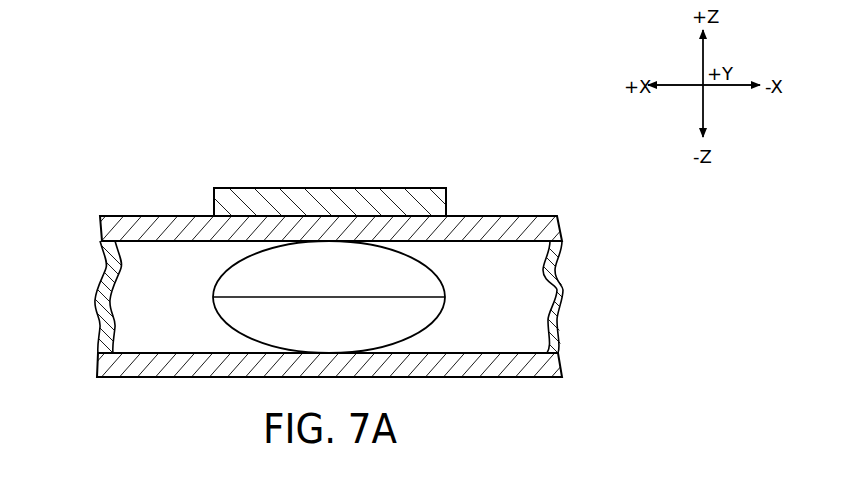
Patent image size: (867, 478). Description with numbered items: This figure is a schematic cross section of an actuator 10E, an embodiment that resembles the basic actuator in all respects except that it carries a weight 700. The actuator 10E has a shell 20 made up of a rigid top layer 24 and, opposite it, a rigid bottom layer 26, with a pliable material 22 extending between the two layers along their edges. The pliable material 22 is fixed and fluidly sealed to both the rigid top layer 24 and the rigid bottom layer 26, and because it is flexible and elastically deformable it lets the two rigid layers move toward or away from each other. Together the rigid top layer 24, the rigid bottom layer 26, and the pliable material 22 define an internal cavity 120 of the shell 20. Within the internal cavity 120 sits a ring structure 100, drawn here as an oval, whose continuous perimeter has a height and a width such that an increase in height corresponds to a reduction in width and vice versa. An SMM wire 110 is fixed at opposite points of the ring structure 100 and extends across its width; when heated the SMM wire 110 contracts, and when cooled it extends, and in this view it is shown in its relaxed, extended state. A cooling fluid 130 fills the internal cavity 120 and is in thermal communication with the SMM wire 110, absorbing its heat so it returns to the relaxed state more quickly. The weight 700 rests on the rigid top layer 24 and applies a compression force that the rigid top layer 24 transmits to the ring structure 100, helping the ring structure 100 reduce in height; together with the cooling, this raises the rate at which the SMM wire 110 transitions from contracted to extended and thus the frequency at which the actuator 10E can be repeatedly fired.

The actuator 10E is at (70, 124).
The shell 20 is at (328, 267).
The pliable material 22 is at (98, 292).
The rigid top layer 24 is at (505, 228).
The rigid bottom layer 26 is at (143, 367).
The ring structure 100 is at (443, 322).
The SMM wire 110 is at (362, 298).
The internal cavity 120 is at (564, 255).
The cooling fluid 130 is at (127, 312).
The weight 700 is at (310, 195).